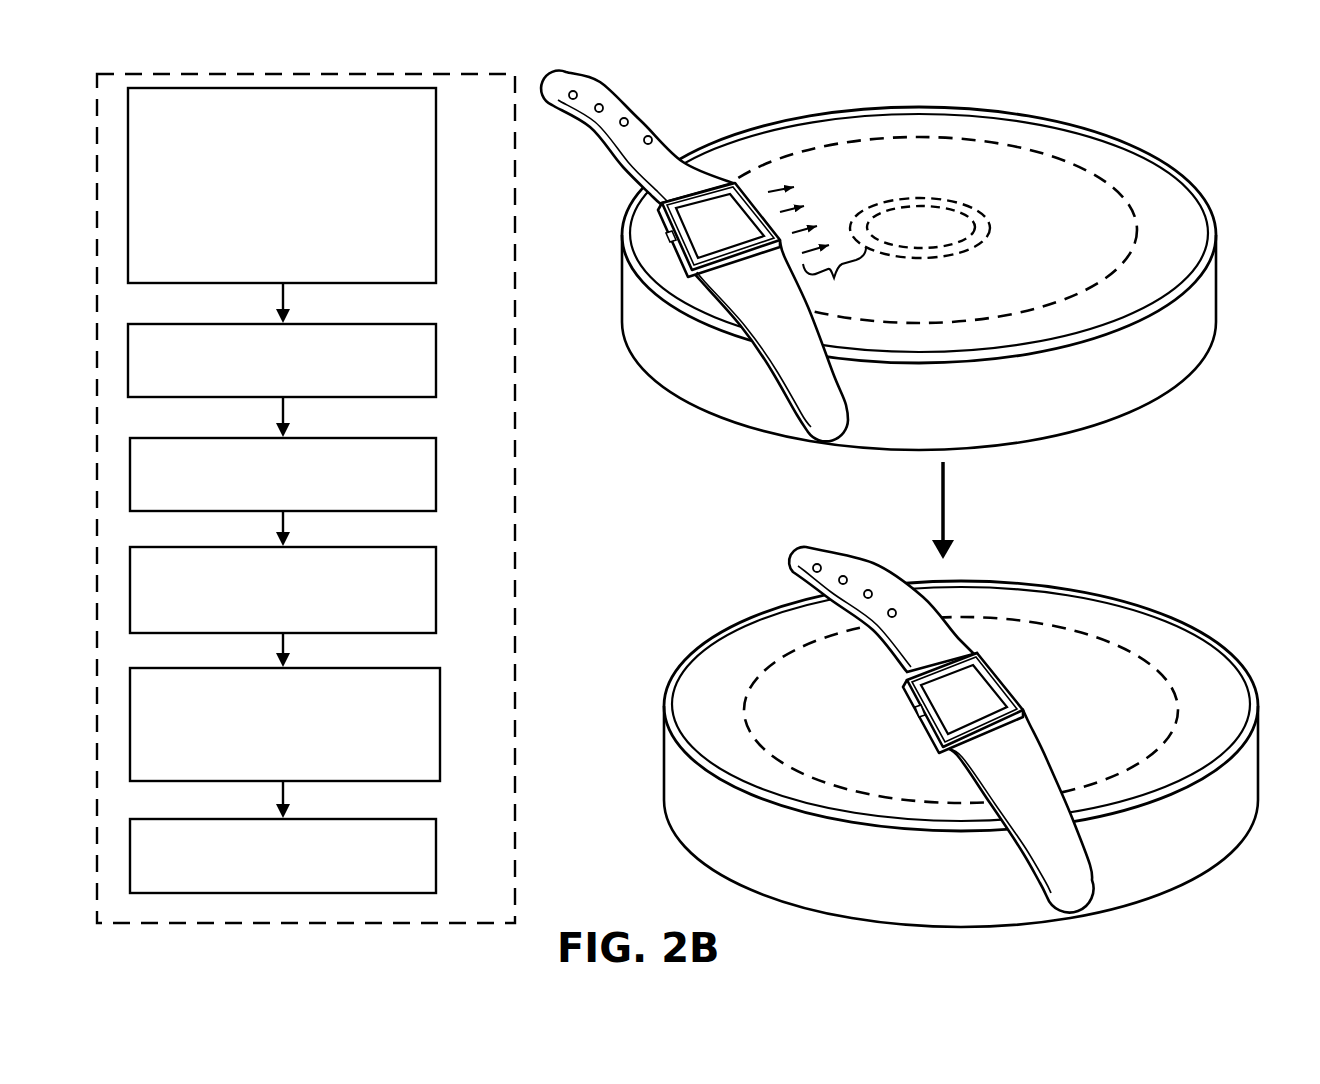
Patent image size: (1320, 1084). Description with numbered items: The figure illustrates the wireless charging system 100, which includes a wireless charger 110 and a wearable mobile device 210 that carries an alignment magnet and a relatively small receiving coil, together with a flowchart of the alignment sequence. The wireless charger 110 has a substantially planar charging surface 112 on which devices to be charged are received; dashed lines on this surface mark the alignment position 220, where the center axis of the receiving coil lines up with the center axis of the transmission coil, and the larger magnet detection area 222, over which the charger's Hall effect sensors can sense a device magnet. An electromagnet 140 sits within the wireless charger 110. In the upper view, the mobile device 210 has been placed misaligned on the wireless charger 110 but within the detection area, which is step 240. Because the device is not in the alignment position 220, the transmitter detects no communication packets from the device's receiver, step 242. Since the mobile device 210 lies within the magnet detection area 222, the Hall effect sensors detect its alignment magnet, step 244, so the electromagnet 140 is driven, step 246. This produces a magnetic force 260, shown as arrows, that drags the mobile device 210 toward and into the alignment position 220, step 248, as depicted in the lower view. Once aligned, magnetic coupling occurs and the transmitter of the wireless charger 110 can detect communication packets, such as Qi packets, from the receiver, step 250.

The system 100 is at (965, 484).
The wireless charger 110 is at (1230, 214).
The charging surface 112 is at (1133, 160).
The electromagnet 140 is at (925, 205).
The mobile device 210 is at (754, 182).
The alignment position 220 is at (993, 230).
The magnet detection area 222 is at (1050, 303).
The step of placing the mobile device misaligned 240 is at (436, 199).
The step of detecting no communication packets 242 is at (436, 355).
The step of detecting the magnet 244 is at (436, 470).
The step of driving the electromagnet 246 is at (436, 580).
The step of aligning the mobile device 248 is at (440, 704).
The step of detecting communication packets 250 is at (436, 849).
The magnetic force 260 is at (817, 247).